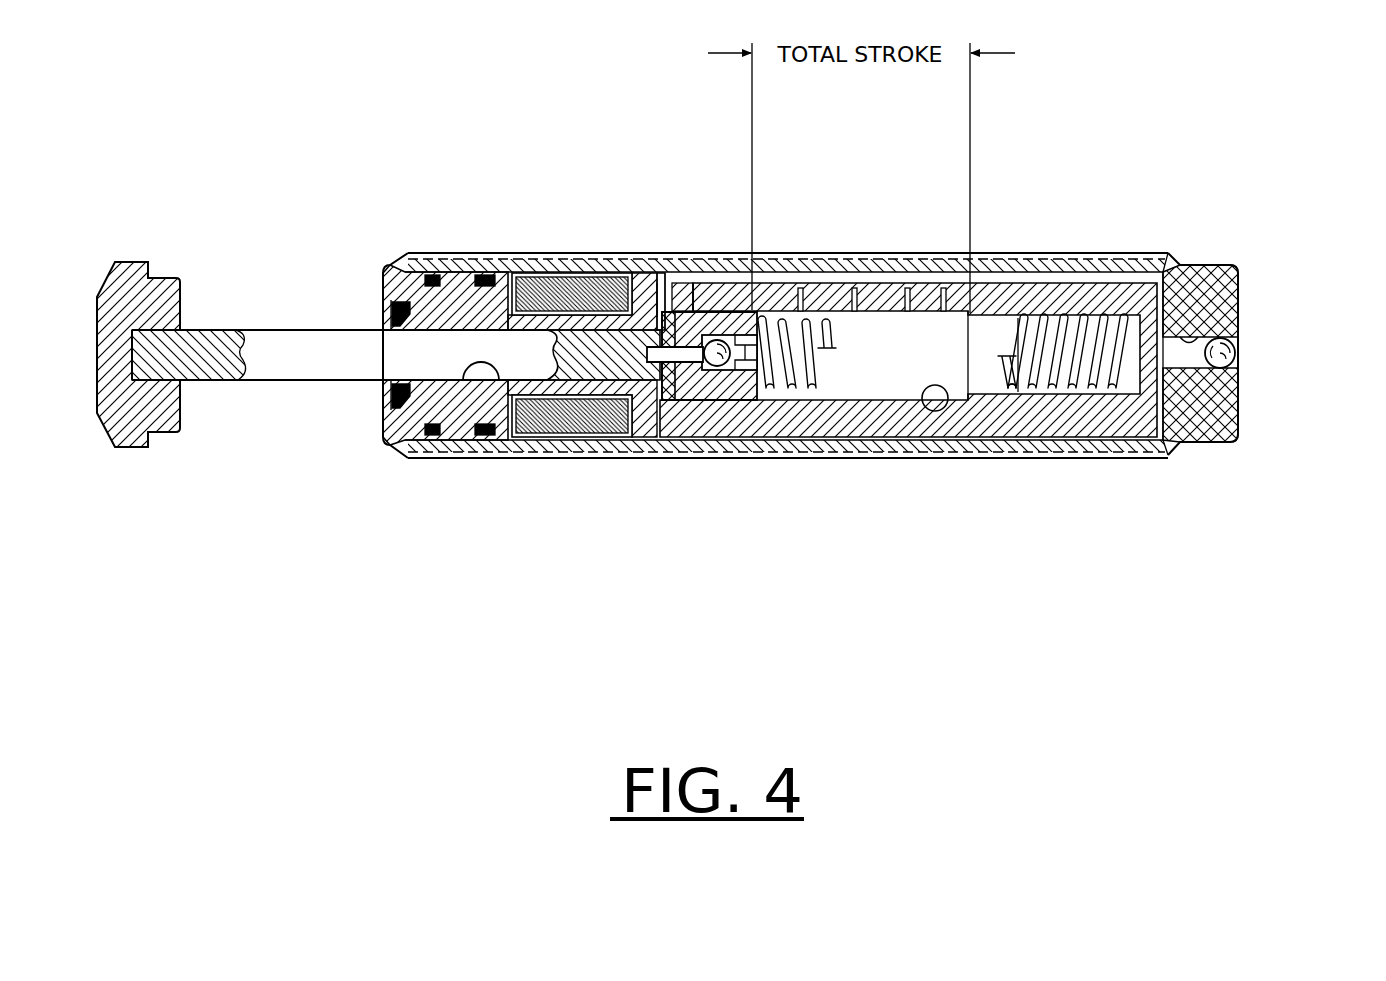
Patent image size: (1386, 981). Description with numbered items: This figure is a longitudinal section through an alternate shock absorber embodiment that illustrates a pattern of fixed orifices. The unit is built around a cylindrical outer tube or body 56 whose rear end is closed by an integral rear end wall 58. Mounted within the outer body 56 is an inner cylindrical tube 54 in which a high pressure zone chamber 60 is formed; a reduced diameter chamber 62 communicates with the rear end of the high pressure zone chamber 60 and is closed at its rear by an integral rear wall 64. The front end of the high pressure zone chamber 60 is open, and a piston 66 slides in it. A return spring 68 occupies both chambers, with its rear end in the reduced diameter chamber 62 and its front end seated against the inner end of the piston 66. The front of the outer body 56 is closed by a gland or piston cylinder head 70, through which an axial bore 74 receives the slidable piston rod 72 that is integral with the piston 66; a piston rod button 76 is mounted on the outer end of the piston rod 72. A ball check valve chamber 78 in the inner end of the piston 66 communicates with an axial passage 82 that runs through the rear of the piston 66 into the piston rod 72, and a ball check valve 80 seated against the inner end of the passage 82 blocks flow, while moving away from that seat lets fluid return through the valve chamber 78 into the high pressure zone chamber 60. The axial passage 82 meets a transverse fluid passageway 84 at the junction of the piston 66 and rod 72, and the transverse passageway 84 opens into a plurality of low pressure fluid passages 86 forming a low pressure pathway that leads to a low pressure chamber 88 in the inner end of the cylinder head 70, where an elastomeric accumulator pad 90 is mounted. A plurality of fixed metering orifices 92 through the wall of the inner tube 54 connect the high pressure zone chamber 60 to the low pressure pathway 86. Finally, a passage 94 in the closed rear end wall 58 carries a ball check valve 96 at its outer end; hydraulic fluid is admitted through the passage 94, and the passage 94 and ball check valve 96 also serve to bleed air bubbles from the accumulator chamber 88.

The inner cylindrical tube 54 is at (982, 417).
The cylindrical outer tube or body 56 is at (1098, 452).
The integral rear end wall 58 is at (1197, 417).
The high pressure zone chamber 60 is at (925, 412).
The reduced diameter chamber 62 is at (982, 312).
The integral rear wall 64 is at (1228, 265).
The piston 66 is at (728, 320).
The return spring 68 is at (1083, 340).
The gland or piston cylinder head 70 is at (498, 412).
The piston rod 72 is at (305, 365).
The axial bore 74 is at (467, 372).
The piston rod button 76 is at (133, 415).
The ball check valve chamber 78 is at (745, 400).
The ball check valve 80 is at (718, 368).
The axial passage 82 is at (683, 390).
The transverse fluid passageway 84 is at (674, 387).
The low pressure fluid passages 86 is at (688, 290).
The low pressure chamber 88 is at (505, 285).
The elastomeric accumulator pad 90 is at (575, 295).
The fixed metering orifices 92 is at (1015, 310).
The passage 94 is at (1200, 333).
The ball check valve 96 is at (1232, 366).